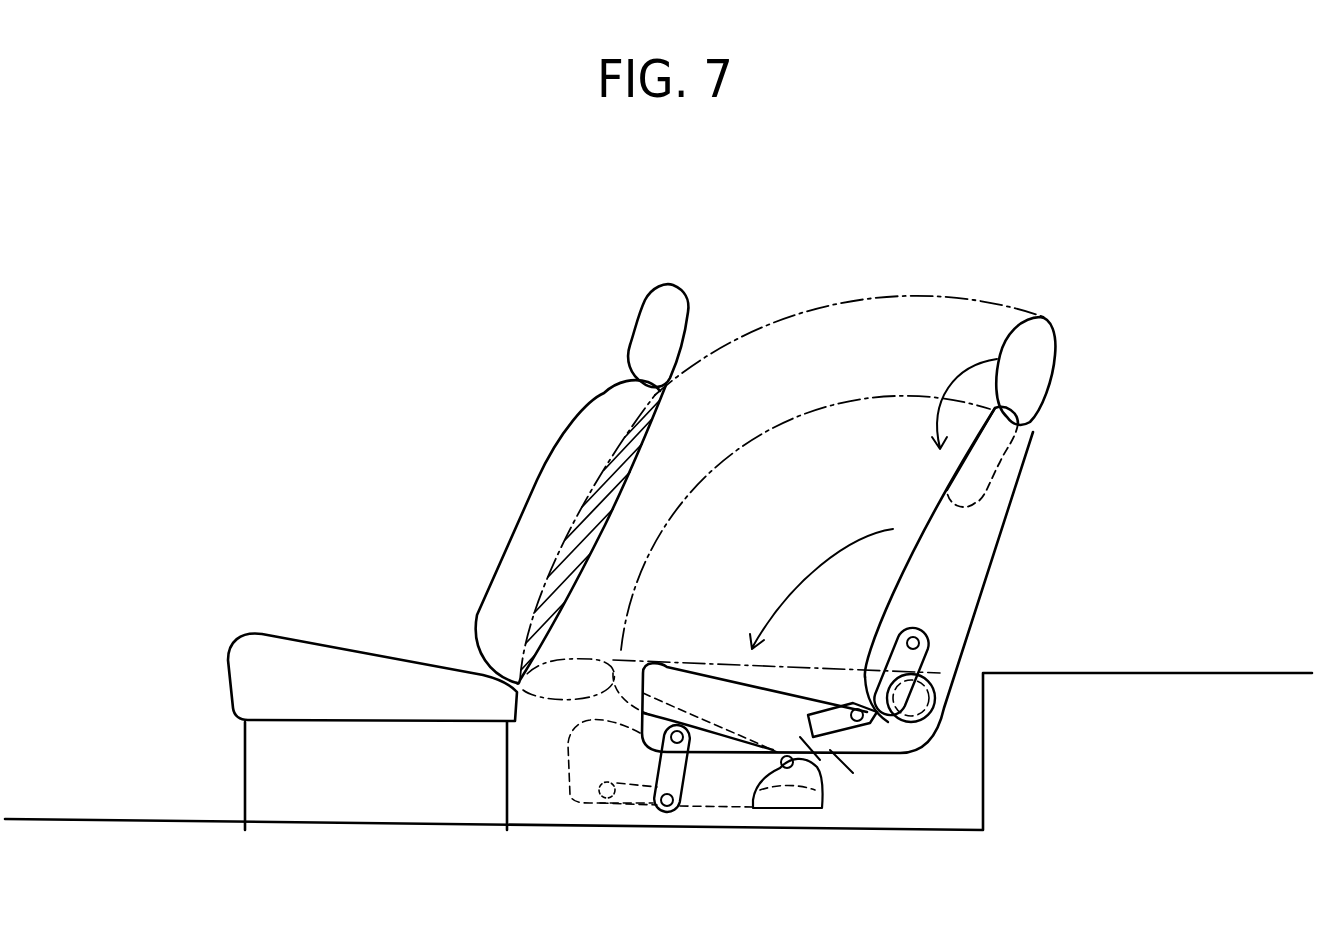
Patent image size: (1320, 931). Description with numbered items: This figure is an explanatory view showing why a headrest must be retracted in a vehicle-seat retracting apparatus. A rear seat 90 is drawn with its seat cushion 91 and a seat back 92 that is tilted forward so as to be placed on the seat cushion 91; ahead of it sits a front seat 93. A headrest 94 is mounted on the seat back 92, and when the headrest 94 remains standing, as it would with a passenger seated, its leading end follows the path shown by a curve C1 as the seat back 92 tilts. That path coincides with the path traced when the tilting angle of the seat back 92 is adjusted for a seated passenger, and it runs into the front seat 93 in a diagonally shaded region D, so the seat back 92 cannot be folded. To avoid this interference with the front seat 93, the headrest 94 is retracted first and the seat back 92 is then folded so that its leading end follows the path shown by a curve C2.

The rear seat 90 is at (843, 553).
The seat cushion 91 is at (835, 755).
The seat back 92 is at (977, 561).
The front seat 93 is at (562, 424).
The headrest 94 is at (1038, 378).
The curve C1 is at (774, 318).
The curve C2 is at (735, 457).
The diagonally shaded region D is at (592, 528).